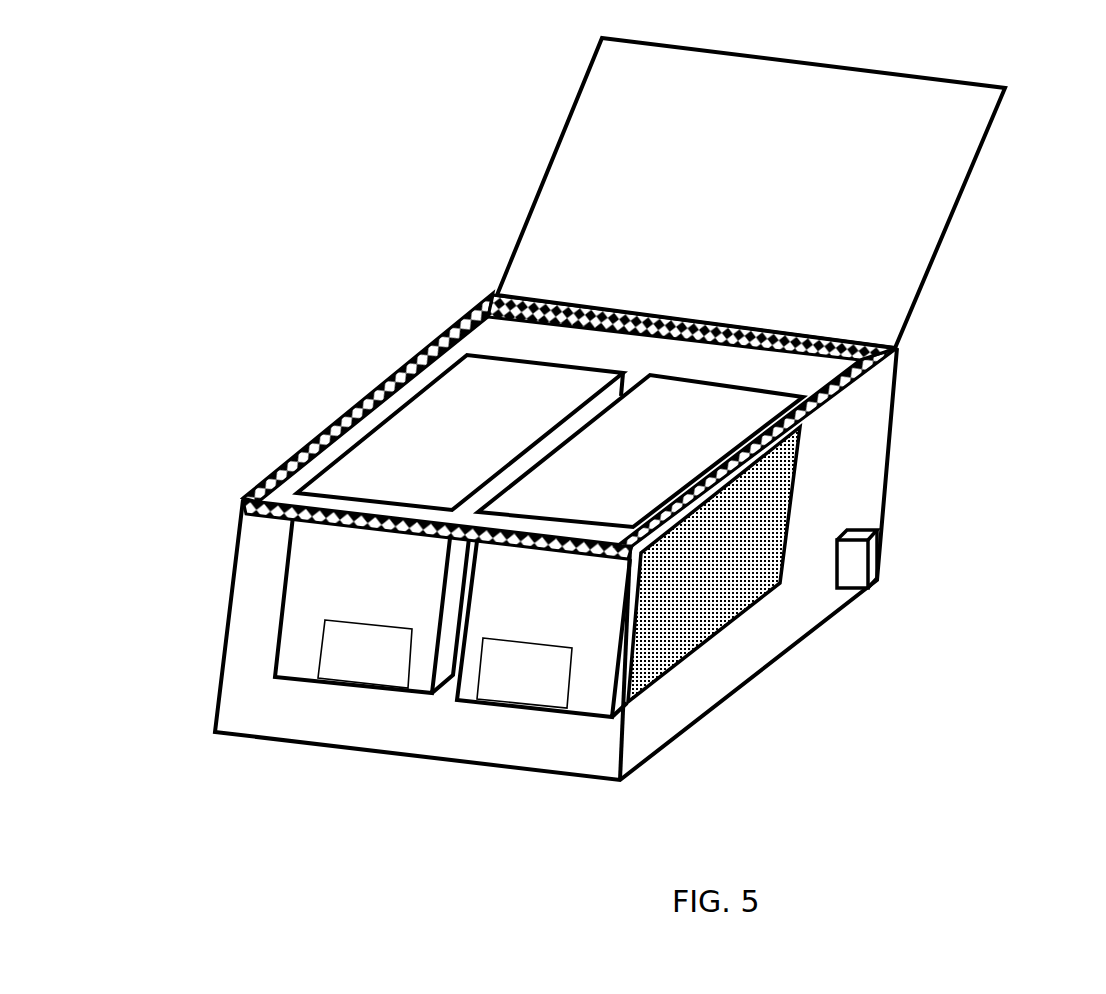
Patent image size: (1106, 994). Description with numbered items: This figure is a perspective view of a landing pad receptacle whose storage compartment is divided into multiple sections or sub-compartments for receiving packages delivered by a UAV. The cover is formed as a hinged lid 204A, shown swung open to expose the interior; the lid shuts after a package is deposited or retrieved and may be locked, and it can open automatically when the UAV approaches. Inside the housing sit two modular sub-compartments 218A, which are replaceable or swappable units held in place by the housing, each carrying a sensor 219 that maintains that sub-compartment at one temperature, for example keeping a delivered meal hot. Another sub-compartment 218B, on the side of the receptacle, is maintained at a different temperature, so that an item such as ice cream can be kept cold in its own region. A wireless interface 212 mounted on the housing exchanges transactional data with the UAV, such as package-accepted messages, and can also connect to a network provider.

The hinged lid 204A is at (575, 218).
The wireless interface 212 is at (858, 558).
The sub-compartment 218A is at (503, 422).
The sub-compartment 218B is at (705, 618).
The temperature sensor 219 is at (445, 664).